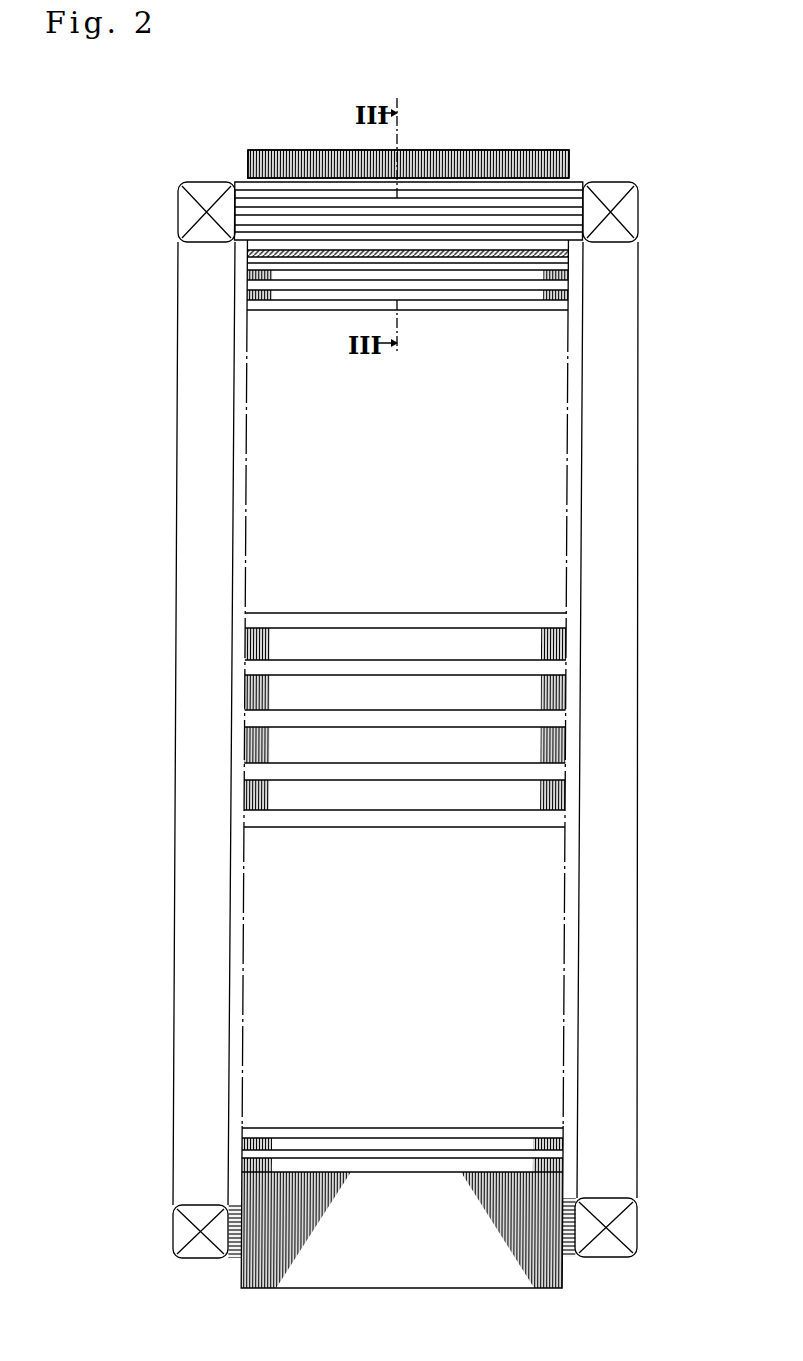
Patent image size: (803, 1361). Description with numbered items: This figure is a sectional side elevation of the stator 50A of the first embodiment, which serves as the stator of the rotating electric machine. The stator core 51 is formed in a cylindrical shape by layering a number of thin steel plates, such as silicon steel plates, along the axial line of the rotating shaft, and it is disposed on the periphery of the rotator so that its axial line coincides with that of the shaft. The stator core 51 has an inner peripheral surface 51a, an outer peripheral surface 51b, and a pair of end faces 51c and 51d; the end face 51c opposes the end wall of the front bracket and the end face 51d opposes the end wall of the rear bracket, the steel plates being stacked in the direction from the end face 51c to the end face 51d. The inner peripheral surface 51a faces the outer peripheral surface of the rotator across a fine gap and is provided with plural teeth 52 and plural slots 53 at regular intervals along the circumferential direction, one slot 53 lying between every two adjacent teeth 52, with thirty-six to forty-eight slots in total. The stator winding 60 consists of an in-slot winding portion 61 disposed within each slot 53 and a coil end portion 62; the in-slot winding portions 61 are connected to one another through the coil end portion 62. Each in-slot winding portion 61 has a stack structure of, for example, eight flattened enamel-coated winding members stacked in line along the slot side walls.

The stator 50A is at (522, 135).
The stator core 51 is at (570, 148).
The inner peripheral surface 51a is at (450, 272).
The outer peripheral surface 51b is at (462, 150).
The end face 51c is at (570, 165).
The end face 51d is at (248, 160).
The teeth 52 is at (313, 295).
The slots 53 is at (524, 298).
The stator winding 60 is at (628, 206).
The in-slot winding portion 61 is at (317, 203).
The coil end portion 62 is at (190, 212).